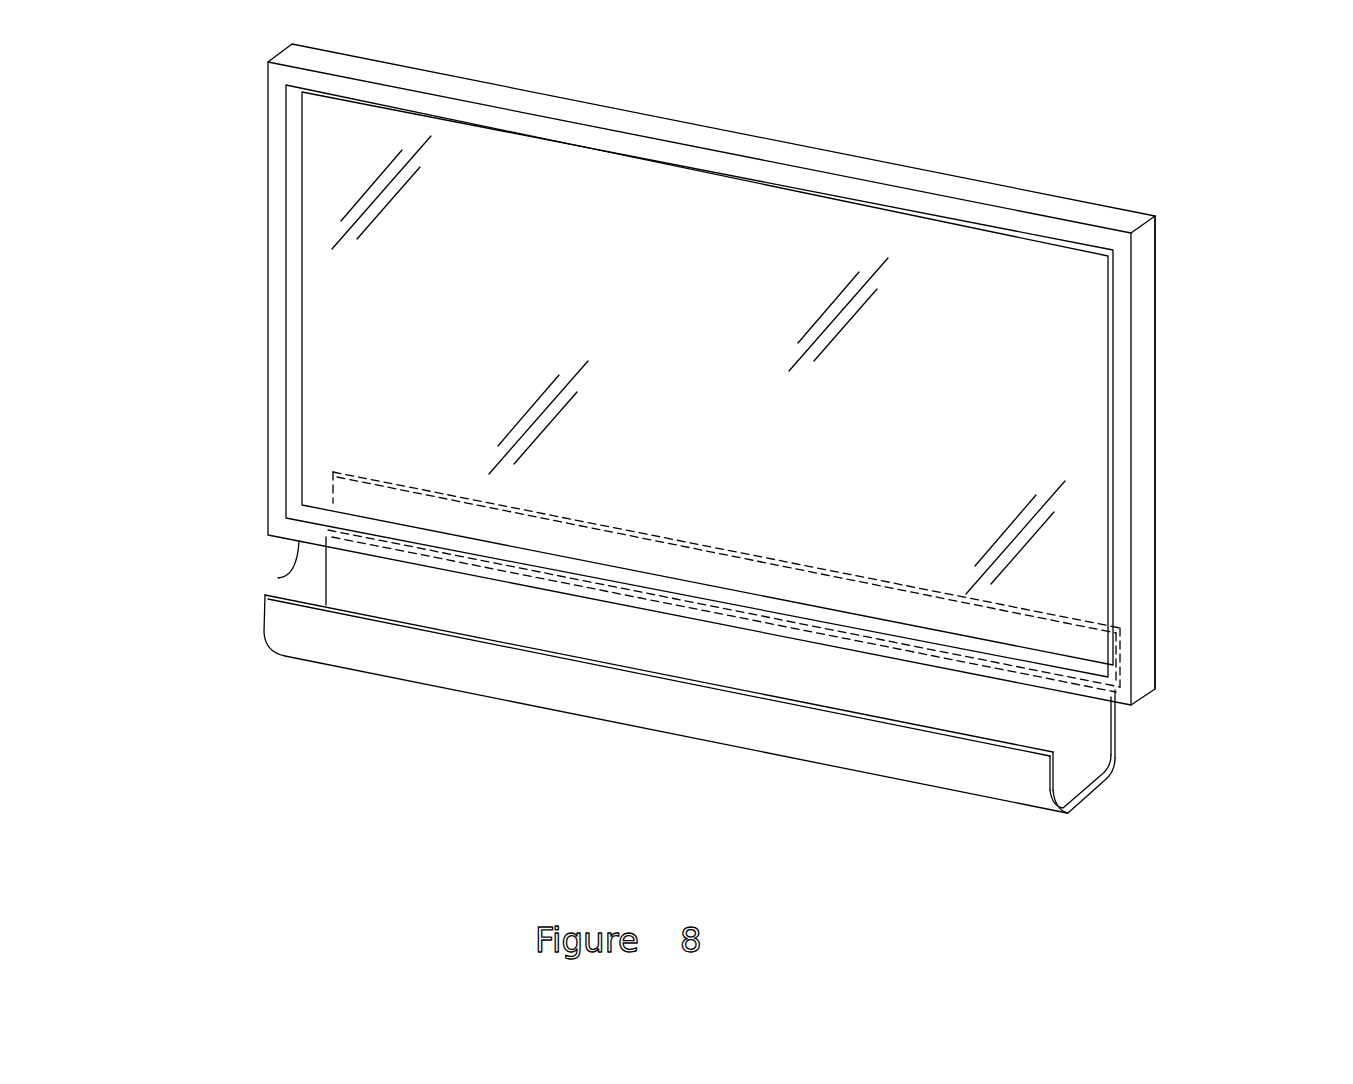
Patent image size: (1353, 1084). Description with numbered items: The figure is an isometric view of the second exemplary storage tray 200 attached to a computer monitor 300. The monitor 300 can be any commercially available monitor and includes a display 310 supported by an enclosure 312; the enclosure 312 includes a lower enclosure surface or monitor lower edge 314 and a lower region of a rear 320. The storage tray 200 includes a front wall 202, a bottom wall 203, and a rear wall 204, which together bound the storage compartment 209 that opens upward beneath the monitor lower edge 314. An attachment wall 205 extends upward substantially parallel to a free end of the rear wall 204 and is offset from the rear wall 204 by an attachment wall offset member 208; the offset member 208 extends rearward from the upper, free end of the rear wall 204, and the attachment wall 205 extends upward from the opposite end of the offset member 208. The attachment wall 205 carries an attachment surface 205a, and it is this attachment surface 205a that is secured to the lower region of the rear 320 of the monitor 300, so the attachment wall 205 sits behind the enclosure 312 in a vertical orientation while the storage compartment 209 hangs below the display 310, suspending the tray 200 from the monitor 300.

The storage tray 200 is at (668, 688).
The front wall 202 is at (603, 698).
The bottom wall 203 is at (1112, 789).
The rear wall 204 is at (1118, 733).
The attachment wall 205 is at (788, 605).
The attachment surface 205a is at (784, 576).
The attachment wall offset member 208 is at (1138, 700).
The storage compartment 209 is at (494, 623).
The monitor 300 is at (1188, 195).
The display 310 is at (387, 360).
The enclosure 312 is at (1143, 461).
The monitor lower edge 314 is at (278, 578).
The rear 320 is at (1164, 578).